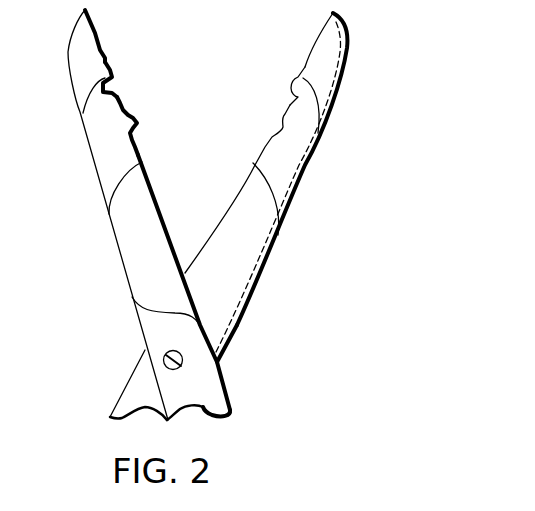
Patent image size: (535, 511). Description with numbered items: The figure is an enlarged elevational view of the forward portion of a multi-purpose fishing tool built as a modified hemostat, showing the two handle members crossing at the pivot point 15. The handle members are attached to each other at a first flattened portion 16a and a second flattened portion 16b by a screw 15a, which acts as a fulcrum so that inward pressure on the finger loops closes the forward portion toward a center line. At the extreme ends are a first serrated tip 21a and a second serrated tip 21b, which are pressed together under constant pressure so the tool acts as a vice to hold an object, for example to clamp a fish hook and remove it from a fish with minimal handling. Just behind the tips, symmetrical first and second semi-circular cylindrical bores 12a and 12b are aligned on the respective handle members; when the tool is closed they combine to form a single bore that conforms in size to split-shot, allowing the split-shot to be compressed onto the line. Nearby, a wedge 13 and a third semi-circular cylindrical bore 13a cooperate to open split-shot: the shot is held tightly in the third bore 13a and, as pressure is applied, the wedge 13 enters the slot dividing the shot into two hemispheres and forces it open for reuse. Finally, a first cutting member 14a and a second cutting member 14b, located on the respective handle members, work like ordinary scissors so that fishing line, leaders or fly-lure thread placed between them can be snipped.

The first semi-circular cylindrical bore 12a is at (112, 88).
The second semi-circular cylindrical bore 12b is at (296, 90).
The wedge 13 is at (137, 127).
The third semi-circular cylindrical bore 13a is at (275, 127).
The first cutting member 14a is at (120, 212).
The second cutting member 14b is at (247, 230).
The pivot point 15 is at (182, 367).
The screw 15a is at (163, 358).
The first flattened portion 16a is at (213, 393).
The second flattened portion 16b is at (135, 397).
The first serrated tip 21a is at (97, 25).
The second serrated tip 21b is at (316, 40).